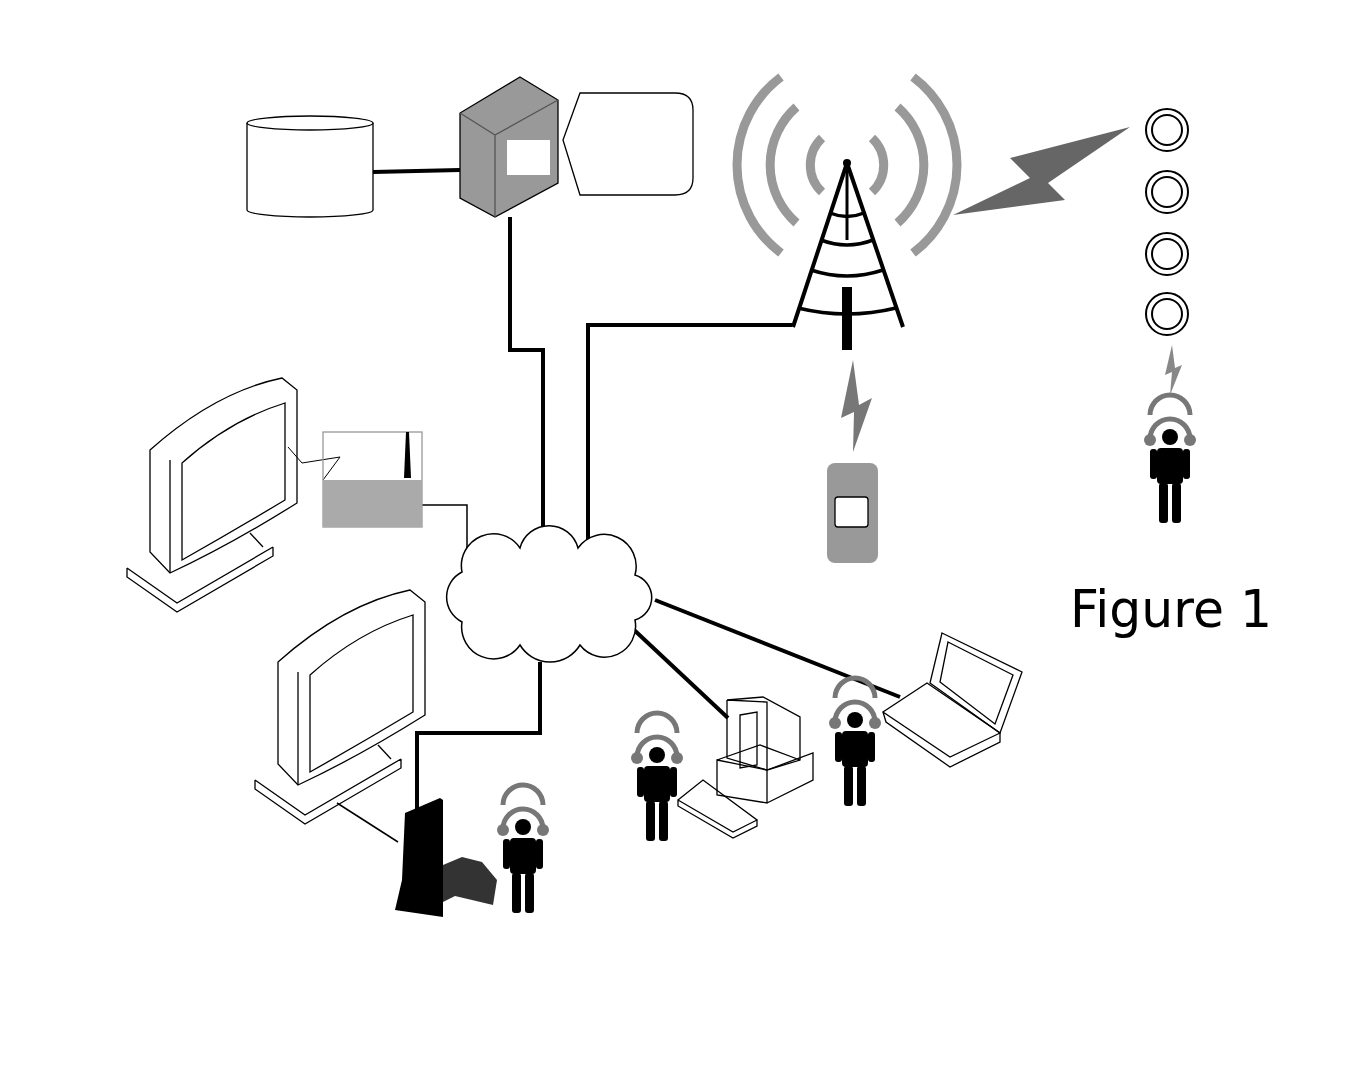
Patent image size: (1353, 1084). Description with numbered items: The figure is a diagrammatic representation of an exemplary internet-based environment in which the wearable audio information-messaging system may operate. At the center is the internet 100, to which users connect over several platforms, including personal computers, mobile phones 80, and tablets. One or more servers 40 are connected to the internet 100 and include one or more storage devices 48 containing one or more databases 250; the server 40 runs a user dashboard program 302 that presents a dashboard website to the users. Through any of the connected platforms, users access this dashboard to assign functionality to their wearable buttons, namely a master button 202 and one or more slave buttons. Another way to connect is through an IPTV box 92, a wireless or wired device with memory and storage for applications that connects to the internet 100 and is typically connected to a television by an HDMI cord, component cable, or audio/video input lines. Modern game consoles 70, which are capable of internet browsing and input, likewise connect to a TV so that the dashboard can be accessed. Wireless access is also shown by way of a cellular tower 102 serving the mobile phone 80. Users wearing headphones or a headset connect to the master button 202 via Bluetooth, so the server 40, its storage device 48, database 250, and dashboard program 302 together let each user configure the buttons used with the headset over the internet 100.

The server 40 is at (509, 147).
The storage device 48 is at (310, 147).
The game console 70 is at (443, 813).
The mobile phone 80 is at (852, 461).
The IPTV box 92 is at (372, 479).
The internet 100 is at (549, 594).
The cellular tower 102 is at (847, 213).
The master button 202 is at (1165, 108).
The database 250 is at (310, 166).
The user dashboard program 302 is at (628, 144).